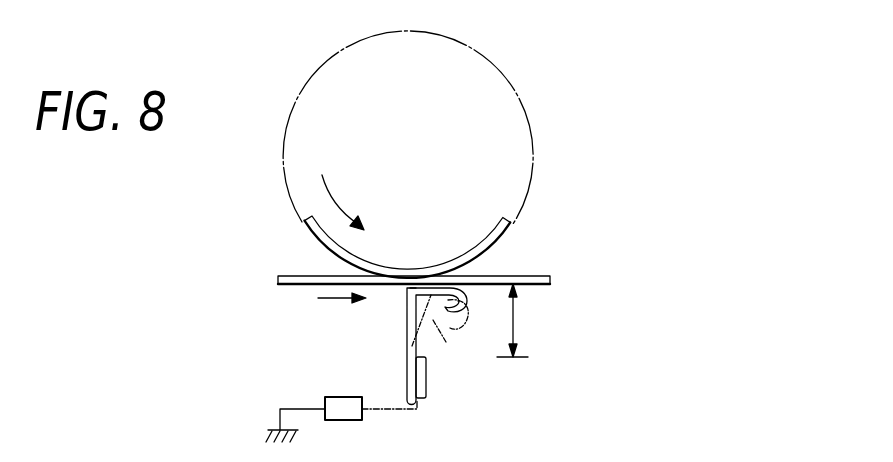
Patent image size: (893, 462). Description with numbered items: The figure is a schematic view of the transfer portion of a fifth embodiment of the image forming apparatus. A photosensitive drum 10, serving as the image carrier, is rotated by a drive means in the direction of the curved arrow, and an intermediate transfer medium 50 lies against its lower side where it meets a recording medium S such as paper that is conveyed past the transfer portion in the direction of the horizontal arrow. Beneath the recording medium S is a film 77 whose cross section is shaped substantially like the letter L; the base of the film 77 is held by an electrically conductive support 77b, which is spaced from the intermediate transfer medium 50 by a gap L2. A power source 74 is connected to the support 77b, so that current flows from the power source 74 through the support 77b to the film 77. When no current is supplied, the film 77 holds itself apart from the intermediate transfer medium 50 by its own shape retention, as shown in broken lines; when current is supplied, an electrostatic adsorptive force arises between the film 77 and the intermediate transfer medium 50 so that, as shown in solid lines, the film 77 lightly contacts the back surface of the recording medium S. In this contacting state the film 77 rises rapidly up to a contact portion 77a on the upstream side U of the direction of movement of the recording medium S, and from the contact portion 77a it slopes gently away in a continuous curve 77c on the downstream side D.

The photosensitive drum 10 is at (528, 121).
The intermediate transfer medium 50 is at (491, 227).
The recording medium S is at (304, 276).
The film 77 is at (404, 337).
The contact portion 77a is at (414, 290).
The support 77b is at (426, 377).
The continuous curve 77c is at (474, 290).
The power source 74 is at (342, 397).
The upstream side U is at (399, 296).
The downstream side D is at (494, 336).
The gap L2 is at (521, 320).